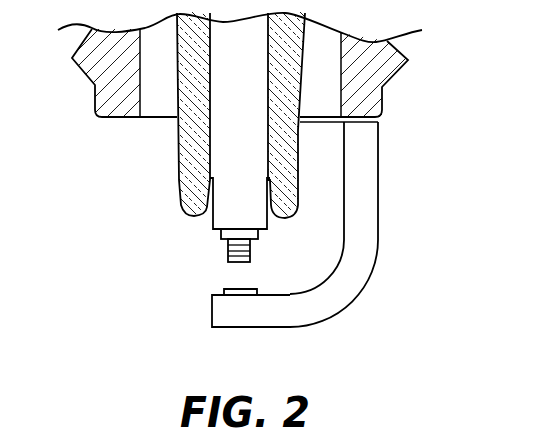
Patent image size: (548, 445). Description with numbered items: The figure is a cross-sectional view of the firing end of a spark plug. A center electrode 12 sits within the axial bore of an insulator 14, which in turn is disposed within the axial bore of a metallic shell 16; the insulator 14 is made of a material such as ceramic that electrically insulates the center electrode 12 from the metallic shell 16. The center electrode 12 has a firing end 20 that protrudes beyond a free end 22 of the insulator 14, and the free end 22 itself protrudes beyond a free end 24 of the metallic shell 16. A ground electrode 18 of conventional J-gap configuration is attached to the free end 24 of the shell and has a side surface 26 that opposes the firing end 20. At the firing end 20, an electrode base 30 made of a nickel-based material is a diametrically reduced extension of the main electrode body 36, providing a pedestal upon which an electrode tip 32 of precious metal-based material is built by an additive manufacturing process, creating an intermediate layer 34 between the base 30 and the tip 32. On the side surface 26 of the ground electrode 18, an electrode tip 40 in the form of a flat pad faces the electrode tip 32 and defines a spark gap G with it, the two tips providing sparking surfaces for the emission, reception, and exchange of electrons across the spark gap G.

The center electrode 12 is at (245, 144).
The insulator 14 is at (289, 92).
The metallic shell 16 is at (383, 63).
The ground electrode 18 is at (363, 197).
The firing end 20 is at (219, 248).
The free end 22 is at (203, 216).
The free end 24 is at (117, 118).
The side surface 26 is at (257, 295).
The electrode base 30 is at (253, 243).
The electrode tip 32 is at (228, 260).
The intermediate layer 34 is at (250, 251).
The main electrode body 36 is at (222, 158).
The electrode tip 40 is at (236, 289).
The spark gap G is at (291, 262).